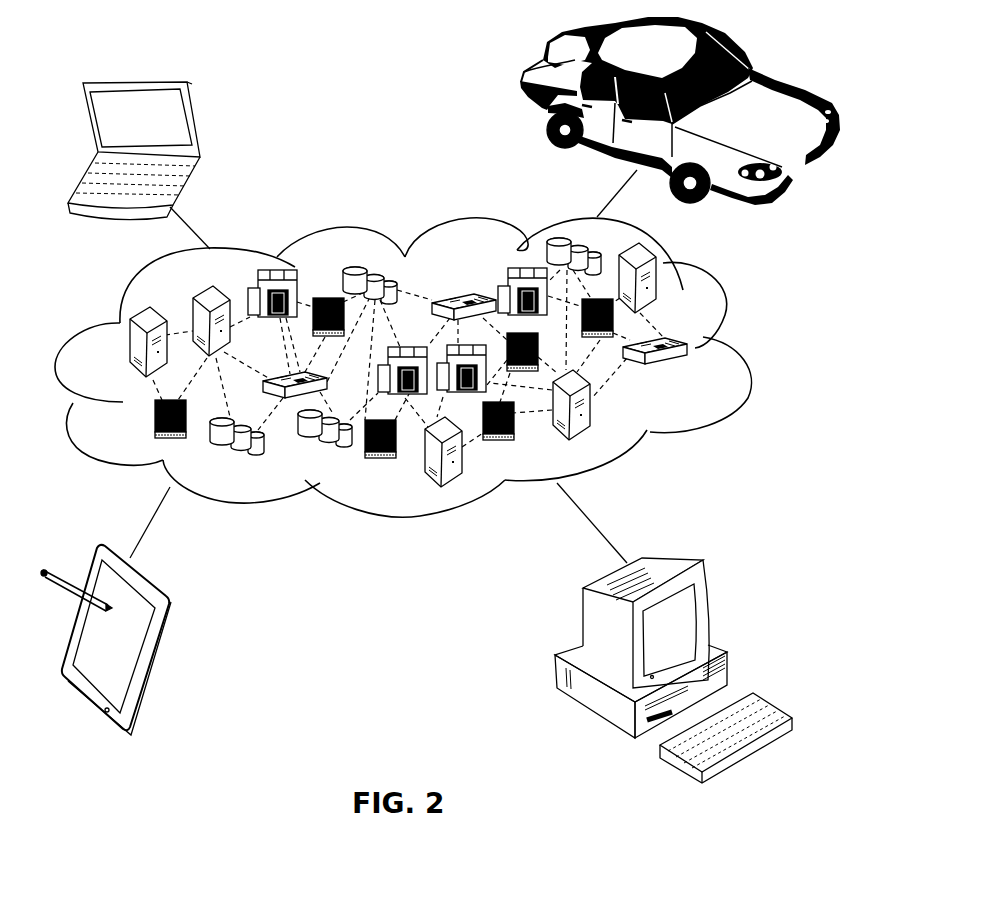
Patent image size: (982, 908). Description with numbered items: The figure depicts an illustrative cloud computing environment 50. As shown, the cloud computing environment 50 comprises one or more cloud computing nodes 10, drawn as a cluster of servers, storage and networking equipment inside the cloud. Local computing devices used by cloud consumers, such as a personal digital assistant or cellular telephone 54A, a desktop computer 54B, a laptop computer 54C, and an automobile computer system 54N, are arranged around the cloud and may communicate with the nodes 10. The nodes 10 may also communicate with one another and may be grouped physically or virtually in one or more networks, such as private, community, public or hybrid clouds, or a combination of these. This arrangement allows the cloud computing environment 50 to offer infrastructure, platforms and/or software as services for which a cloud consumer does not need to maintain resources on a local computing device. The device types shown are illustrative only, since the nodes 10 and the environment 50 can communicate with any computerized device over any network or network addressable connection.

The cloud computing node 10 is at (712, 379).
The cloud computing environment 50 is at (742, 351).
The personal digital assistant (PDA) or cellular telephone 54A is at (163, 632).
The desktop computer 54B is at (681, 556).
The laptop computer 54C is at (192, 120).
The automobile computer system 54N is at (522, 98).